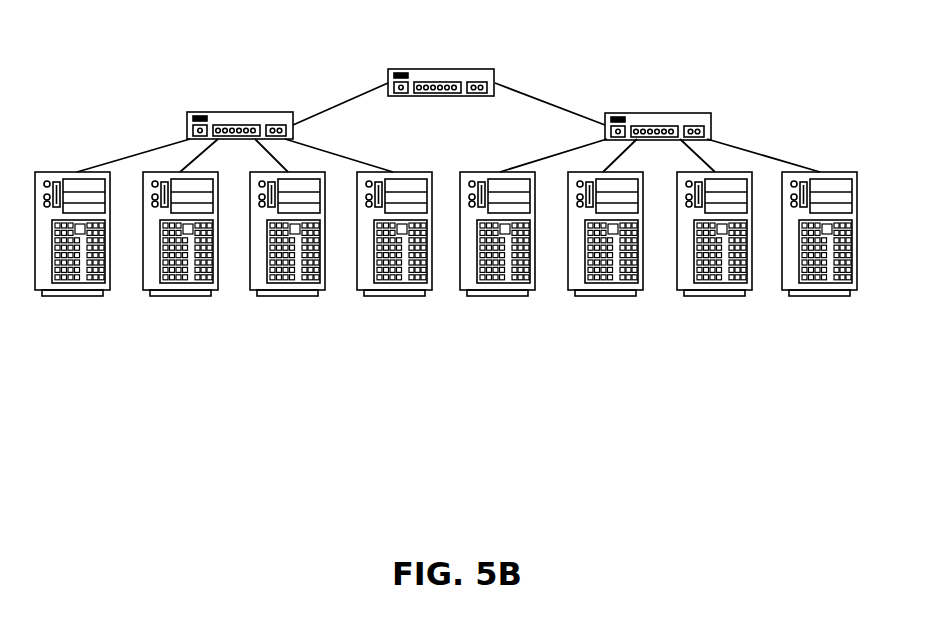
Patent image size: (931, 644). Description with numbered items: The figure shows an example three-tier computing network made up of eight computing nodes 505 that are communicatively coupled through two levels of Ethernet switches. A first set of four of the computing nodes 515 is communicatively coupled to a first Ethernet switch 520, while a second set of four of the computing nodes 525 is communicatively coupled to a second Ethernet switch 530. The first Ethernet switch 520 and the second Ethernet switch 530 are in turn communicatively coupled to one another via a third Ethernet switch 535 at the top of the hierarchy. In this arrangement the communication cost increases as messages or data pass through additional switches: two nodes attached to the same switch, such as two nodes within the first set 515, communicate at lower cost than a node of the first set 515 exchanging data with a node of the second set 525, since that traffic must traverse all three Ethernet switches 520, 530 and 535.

The computing nodes 505 is at (450, 272).
The first set of computing nodes 515 is at (433, 325).
The second set of computing nodes 525 is at (865, 422).
The first Ethernet switch 520 is at (217, 111).
The second Ethernet switch 530 is at (683, 113).
The third Ethernet switch 535 is at (468, 69).